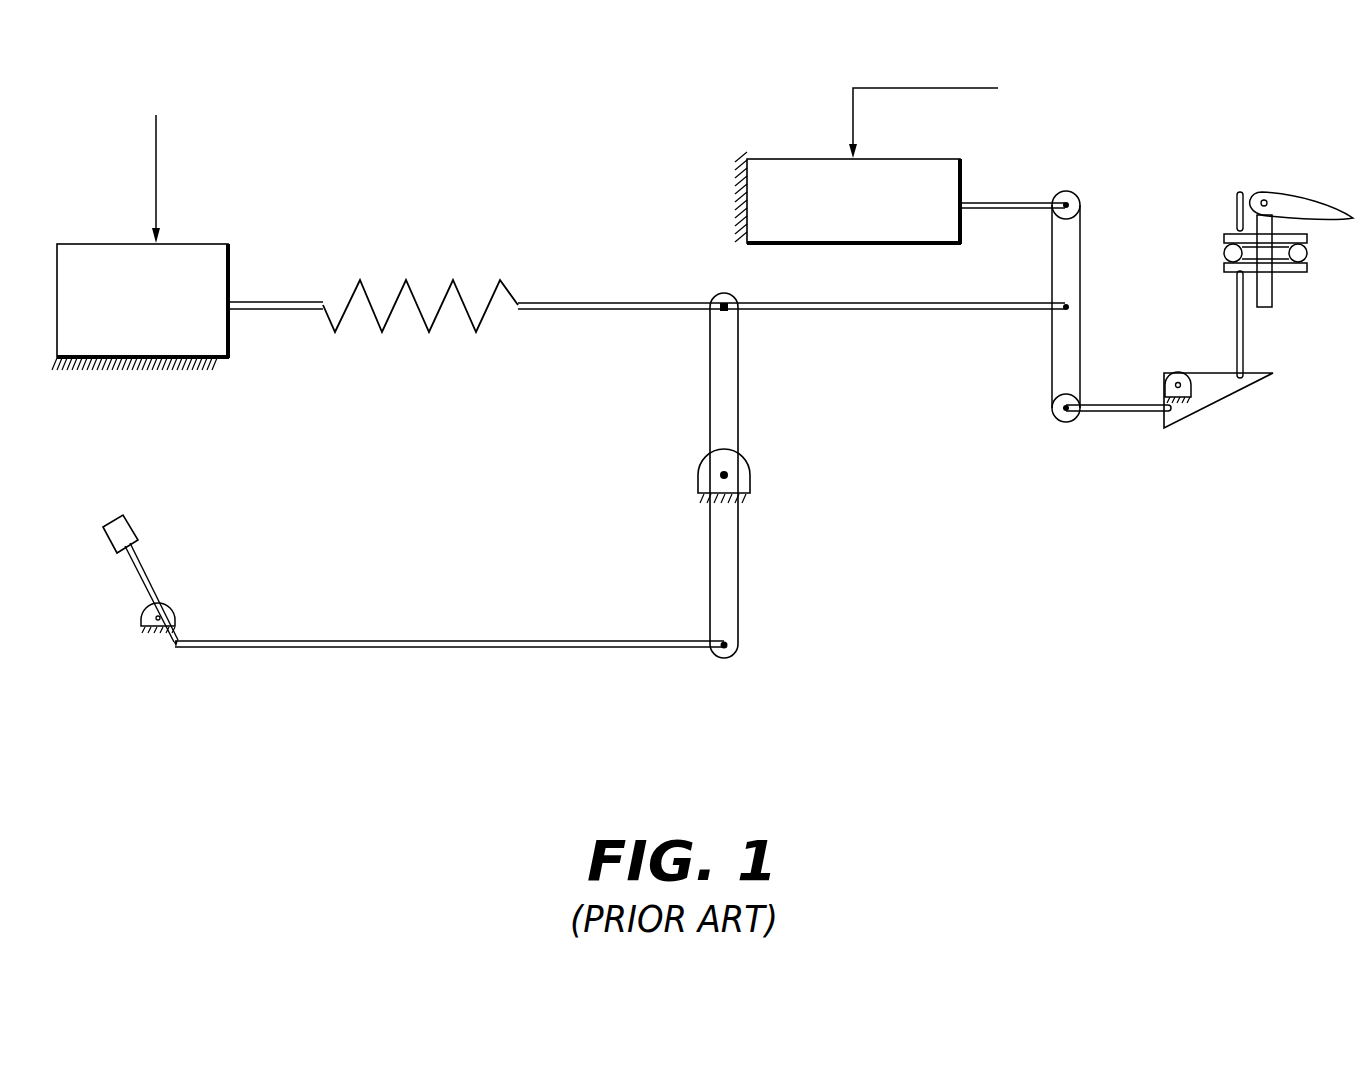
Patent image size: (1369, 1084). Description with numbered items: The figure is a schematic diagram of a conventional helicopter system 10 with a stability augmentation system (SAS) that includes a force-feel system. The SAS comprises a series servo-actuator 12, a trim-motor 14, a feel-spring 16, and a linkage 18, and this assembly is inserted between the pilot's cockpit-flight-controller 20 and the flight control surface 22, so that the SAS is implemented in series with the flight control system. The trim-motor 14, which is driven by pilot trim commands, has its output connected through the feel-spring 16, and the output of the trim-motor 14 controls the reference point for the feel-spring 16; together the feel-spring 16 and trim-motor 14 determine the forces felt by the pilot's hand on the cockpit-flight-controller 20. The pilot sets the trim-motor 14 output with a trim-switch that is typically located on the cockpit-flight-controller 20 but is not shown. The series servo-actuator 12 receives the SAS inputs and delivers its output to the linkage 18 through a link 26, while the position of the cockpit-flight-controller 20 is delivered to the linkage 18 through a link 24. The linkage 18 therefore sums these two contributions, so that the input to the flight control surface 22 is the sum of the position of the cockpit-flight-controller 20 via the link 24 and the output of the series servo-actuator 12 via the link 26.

The helicopter system 10 is at (563, 104).
The series servo-actuator 12 is at (808, 158).
The trim-motor 14 is at (208, 244).
The feel-spring 16 is at (429, 334).
The linkage 18 is at (1082, 265).
The cockpit-flight-controller 20 is at (135, 530).
The flight control surface 22 is at (1280, 192).
The link 24 is at (868, 310).
The link 26 is at (1003, 200).